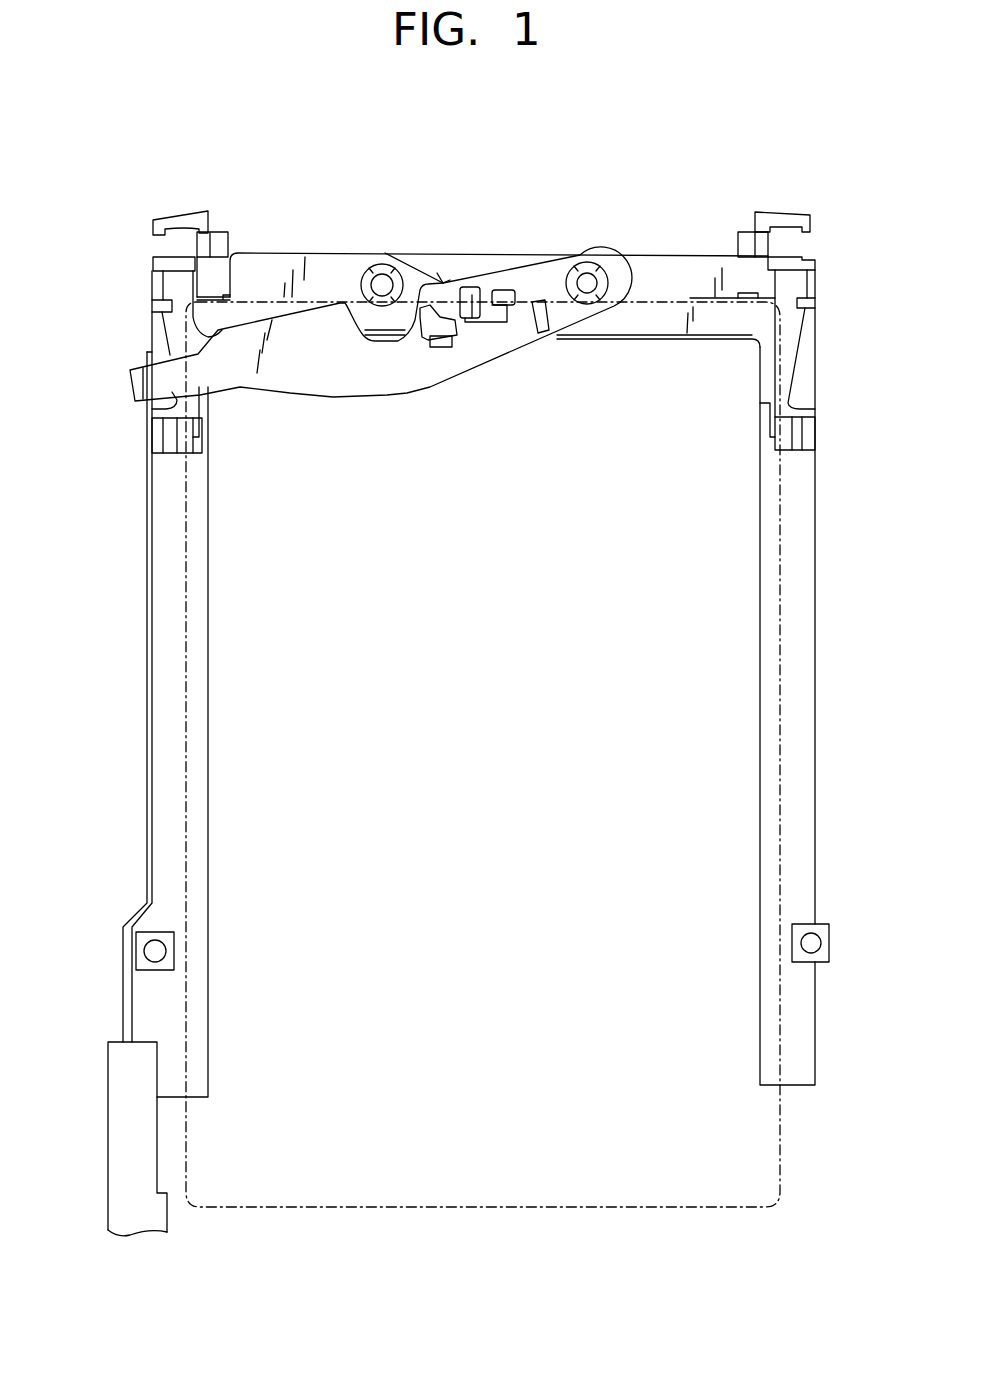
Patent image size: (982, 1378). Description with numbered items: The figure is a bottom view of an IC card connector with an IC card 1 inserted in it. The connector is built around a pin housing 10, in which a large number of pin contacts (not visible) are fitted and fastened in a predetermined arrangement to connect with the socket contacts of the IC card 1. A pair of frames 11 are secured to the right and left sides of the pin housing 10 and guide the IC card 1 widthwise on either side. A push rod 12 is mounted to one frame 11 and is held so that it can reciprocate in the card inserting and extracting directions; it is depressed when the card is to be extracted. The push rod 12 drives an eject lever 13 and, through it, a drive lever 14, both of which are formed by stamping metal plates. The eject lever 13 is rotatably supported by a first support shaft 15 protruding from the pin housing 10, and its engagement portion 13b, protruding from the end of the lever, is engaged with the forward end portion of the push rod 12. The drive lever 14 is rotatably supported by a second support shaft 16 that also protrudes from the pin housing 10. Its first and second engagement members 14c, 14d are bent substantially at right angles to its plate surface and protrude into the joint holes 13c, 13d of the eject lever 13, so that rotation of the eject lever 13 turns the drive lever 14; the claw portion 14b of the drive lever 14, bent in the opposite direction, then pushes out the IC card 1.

The IC card 1 is at (731, 1209).
The pin housing 10 is at (680, 254).
The frame 11 is at (160, 686).
The push rod 12 is at (150, 583).
The eject lever 13 is at (318, 397).
The engagement portion 13b is at (130, 377).
The joint hole 13c is at (473, 290).
The joint hole 13d is at (433, 343).
The drive lever 14 is at (317, 252).
The claw portion 14b is at (210, 297).
The first engagement member 14c is at (472, 323).
The second engagement member 14d is at (443, 283).
The first support shaft 15 is at (587, 268).
The second support shaft 16 is at (382, 270).